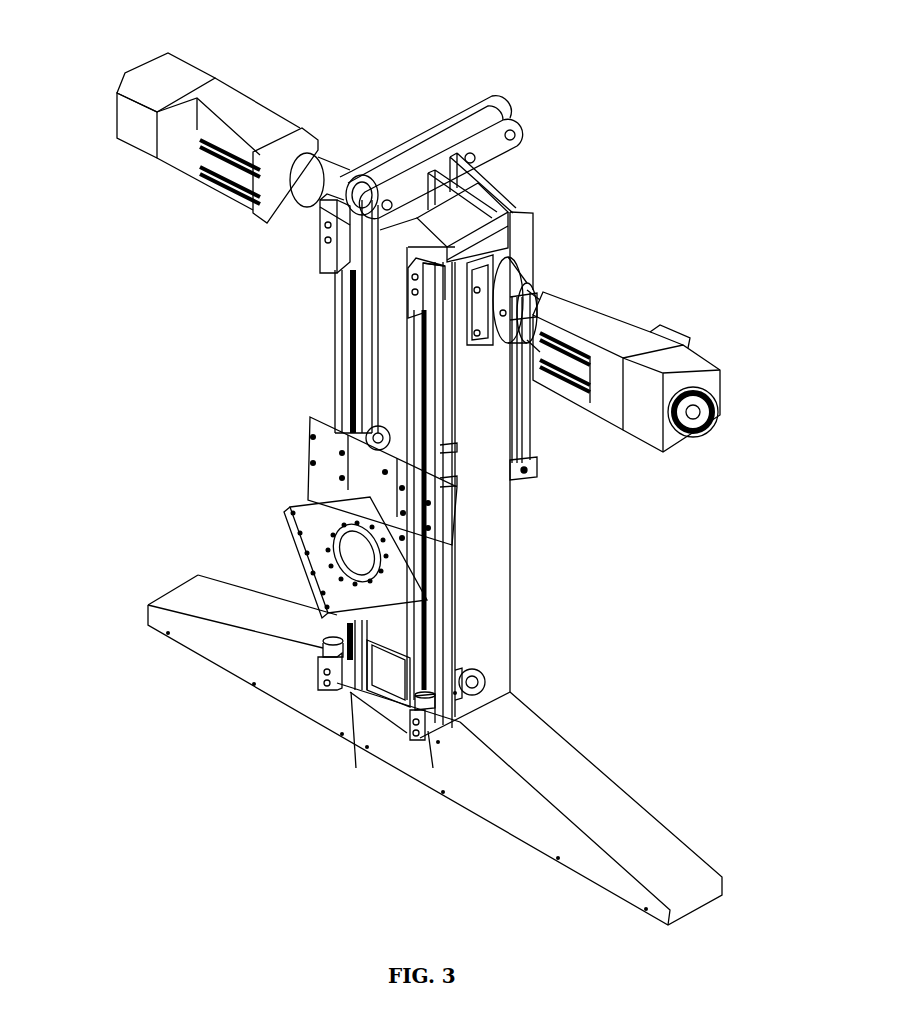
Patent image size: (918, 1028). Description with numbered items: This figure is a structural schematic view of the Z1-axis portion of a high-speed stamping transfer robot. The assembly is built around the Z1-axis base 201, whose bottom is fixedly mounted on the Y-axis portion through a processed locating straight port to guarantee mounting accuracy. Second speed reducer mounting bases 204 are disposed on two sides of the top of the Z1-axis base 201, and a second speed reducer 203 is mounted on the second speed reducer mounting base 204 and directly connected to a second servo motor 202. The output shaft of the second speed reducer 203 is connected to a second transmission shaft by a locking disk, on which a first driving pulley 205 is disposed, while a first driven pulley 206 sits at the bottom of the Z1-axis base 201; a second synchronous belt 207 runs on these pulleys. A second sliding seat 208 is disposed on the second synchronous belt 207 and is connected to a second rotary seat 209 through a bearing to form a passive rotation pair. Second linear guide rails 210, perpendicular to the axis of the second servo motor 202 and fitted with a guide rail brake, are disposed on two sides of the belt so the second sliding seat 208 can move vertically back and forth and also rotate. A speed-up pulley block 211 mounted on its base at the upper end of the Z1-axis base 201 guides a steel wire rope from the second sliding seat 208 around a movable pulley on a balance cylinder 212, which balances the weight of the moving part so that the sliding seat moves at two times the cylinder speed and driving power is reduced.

The Z1-axis base 201 is at (478, 540).
The second servo motor 202 is at (700, 352).
The second speed reducer 203 is at (547, 290).
The second speed reducer mounting base 204 is at (507, 225).
The first driving pulley 205 is at (480, 187).
The first driven pulley 206 is at (420, 743).
The second synchronous belt 207 is at (388, 347).
The second sliding seat 208 is at (310, 462).
The second rotary seat 209 is at (292, 540).
The second linear guide rail 210 is at (333, 377).
The speed-up pulley block 211 is at (487, 92).
The balance cylinder 212 is at (513, 460).